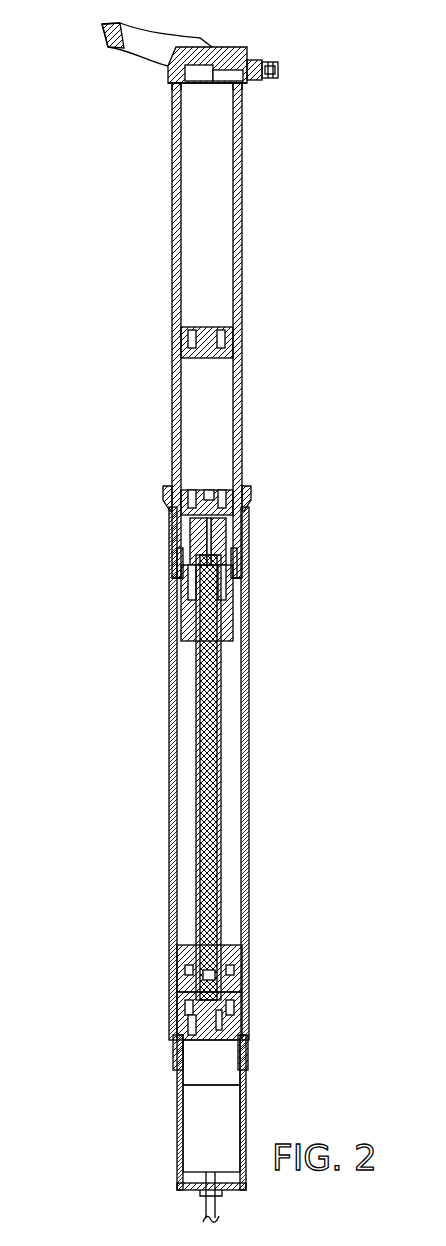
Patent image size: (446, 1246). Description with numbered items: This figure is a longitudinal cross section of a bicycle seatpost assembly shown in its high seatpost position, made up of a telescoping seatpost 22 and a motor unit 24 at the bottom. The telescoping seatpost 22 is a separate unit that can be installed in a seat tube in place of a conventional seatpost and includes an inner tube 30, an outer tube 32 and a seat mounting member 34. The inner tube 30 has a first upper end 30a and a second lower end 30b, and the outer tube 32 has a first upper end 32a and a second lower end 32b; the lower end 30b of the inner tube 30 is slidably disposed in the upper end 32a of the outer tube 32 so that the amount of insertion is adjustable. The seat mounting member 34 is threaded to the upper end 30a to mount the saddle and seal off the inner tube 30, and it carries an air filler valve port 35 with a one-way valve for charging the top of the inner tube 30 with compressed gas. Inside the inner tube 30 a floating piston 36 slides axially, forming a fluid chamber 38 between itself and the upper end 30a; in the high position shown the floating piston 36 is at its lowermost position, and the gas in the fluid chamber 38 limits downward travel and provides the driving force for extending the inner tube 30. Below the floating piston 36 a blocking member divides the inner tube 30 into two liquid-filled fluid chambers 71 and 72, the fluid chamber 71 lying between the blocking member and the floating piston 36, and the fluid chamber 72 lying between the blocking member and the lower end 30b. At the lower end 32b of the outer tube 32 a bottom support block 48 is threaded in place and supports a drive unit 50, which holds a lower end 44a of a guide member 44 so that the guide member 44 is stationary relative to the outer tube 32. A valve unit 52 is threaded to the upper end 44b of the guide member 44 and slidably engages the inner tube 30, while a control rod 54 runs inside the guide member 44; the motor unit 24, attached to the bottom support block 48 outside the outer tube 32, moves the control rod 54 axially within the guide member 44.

The telescoping seatpost 22 is at (306, 124).
The motor unit 24 is at (170, 1141).
The inner tube 30 is at (172, 267).
The first (upper) end of inner tube 30a is at (209, 80).
The second (lower) end of inner tube 30b is at (178, 578).
The outer tube 32 is at (170, 832).
The first (upper) end of outer tube 32a is at (168, 484).
The second (lower) end of outer tube 32b is at (173, 1042).
The seat mounting member 34 is at (171, 110).
The air filler valve port 35 is at (261, 60).
The floating piston 36 is at (212, 328).
The fluid chamber 38 is at (205, 220).
The guide member 44 is at (222, 712).
The lower end of guide member 44a is at (243, 953).
The upper end of guide member 44b is at (223, 588).
The bottom support block 48 is at (235, 1023).
The drive unit 50 is at (160, 985).
The valve unit 52 is at (236, 535).
The control rod 54 is at (212, 758).
The fluid chamber 71 is at (210, 420).
The fluid chamber 72 is at (187, 525).